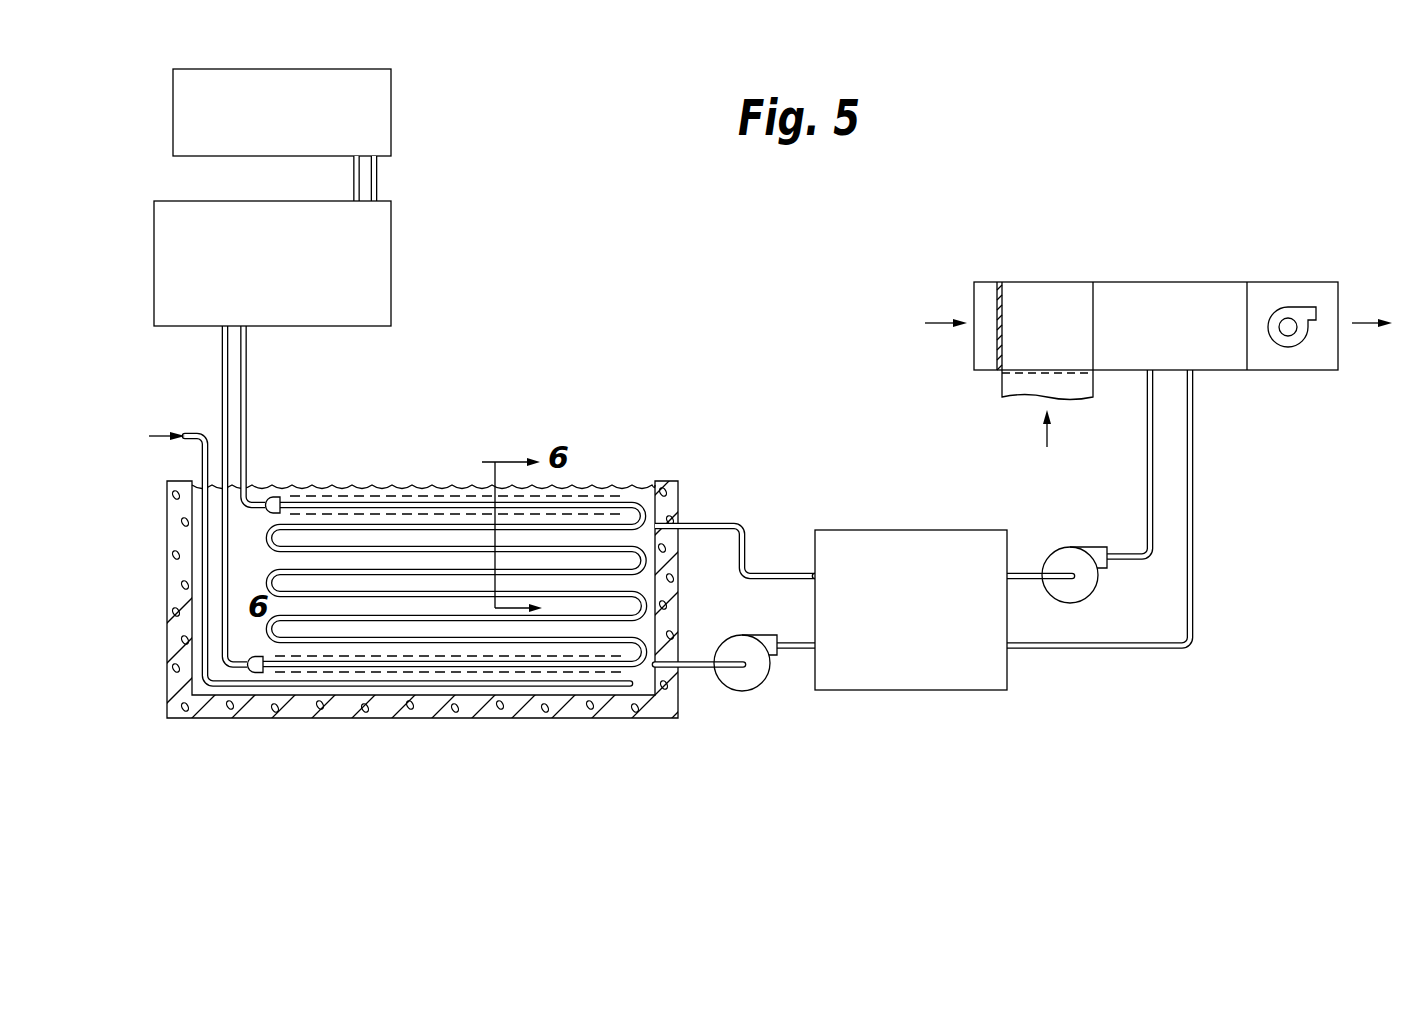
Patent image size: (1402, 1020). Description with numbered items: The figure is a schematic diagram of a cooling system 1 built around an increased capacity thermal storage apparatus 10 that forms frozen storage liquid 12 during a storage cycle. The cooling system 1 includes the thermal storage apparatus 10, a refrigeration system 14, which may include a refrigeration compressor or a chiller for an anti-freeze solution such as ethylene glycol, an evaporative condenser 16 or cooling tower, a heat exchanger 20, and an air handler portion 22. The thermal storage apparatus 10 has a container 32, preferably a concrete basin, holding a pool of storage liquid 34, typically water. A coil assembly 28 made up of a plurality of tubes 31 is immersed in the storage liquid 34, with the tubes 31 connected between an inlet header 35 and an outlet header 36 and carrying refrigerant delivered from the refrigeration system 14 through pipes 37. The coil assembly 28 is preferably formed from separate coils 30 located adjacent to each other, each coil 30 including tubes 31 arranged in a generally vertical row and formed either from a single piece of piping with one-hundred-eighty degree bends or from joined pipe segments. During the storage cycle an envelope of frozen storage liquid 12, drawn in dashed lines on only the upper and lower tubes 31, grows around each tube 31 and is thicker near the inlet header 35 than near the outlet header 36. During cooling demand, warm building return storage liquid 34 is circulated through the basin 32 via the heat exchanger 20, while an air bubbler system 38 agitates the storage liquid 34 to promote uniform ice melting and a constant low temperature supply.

The cooling system 1 is at (490, 372).
The thermal storage apparatus 10 is at (645, 480).
The frozen storage liquid 12 is at (597, 483).
The refrigeration system 14 is at (391, 225).
The evaporative condenser 16 is at (391, 92).
The heat exchanger 20 is at (1008, 672).
The air handler portion 22 is at (1232, 282).
The coil assembly 28 is at (332, 500).
The coil 30 is at (378, 503).
The tube 31 is at (405, 527).
The container 32 is at (167, 612).
The storage liquid 34 is at (268, 575).
The inlet header 35 is at (275, 496).
The outlet header 36 is at (254, 673).
The pipes 37 is at (247, 380).
The air bubbler system 38 is at (203, 657).